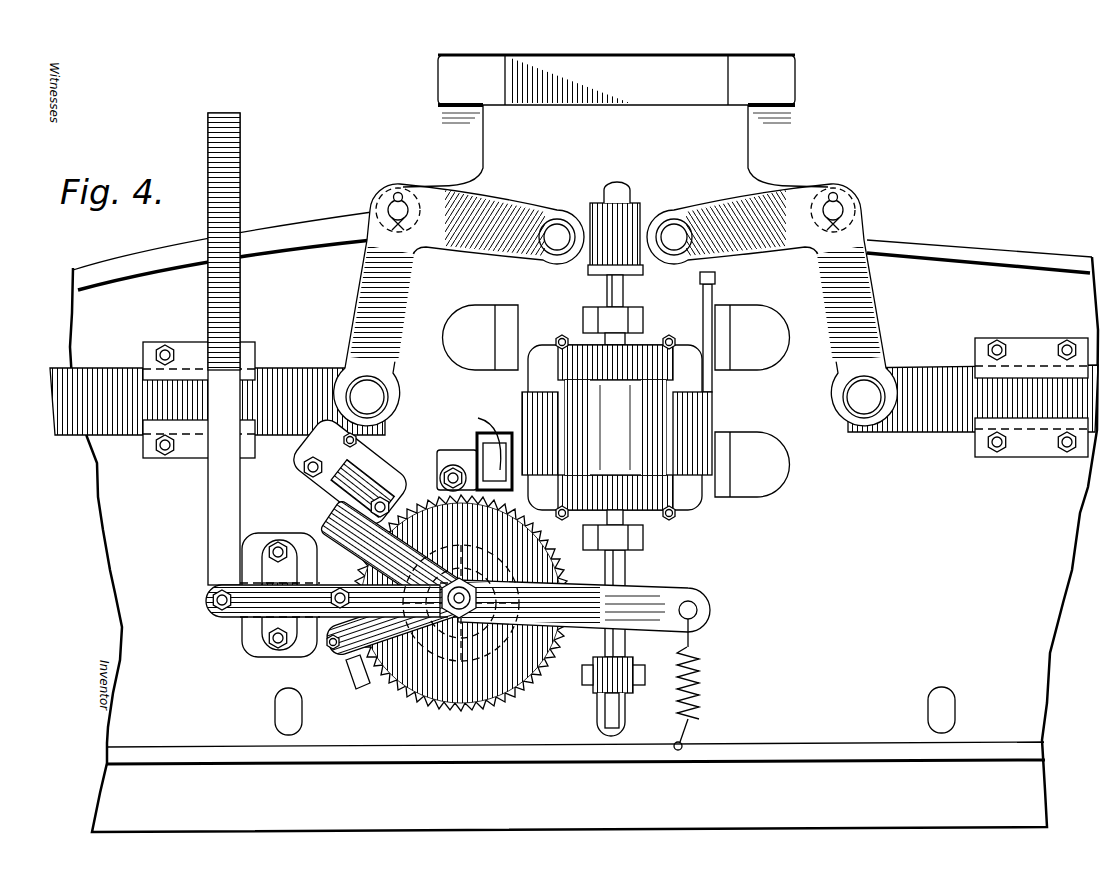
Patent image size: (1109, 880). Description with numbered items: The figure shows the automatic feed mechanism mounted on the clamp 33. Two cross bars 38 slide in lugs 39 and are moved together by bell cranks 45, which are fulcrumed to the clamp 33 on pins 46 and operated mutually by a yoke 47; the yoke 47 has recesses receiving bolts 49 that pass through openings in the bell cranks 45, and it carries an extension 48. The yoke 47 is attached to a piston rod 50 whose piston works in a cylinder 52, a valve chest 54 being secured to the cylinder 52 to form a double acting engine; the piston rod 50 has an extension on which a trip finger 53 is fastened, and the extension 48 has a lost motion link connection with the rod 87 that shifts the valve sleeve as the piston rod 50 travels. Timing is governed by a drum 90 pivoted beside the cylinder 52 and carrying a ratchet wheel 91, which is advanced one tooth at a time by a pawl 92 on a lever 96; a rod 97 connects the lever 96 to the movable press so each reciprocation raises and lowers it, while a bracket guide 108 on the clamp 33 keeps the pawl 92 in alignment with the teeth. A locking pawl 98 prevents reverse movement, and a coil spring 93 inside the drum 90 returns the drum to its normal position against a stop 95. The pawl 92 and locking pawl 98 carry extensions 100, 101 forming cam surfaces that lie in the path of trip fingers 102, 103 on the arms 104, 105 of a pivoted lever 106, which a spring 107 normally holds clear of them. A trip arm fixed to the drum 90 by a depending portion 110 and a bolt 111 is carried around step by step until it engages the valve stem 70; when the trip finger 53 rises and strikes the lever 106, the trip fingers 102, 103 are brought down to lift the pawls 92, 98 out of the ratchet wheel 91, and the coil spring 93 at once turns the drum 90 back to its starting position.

The clamp 33 is at (584, 522).
The cross bar 38 is at (75, 408).
The lug 39 is at (180, 348).
The bell crank 45 is at (358, 318).
The pin 46 is at (398, 205).
The yoke 47 is at (620, 212).
The extension of the yoke 48 is at (683, 270).
The bolt 49 is at (557, 232).
The piston rod 50 is at (607, 278).
The cylinder 52 is at (615, 427).
The trip finger 53 is at (625, 665).
The valve chest 54 is at (527, 408).
The valve stem 70 is at (478, 418).
The rod 87 is at (705, 316).
The drum 90 is at (625, 568).
The ratchet wheel 91 is at (461, 603).
The pawl 92 is at (362, 594).
The coil spring 93 is at (480, 572).
The stop 95 is at (445, 550).
The lever 96 is at (245, 615).
The rod 97 is at (210, 493).
The locking pawl 98 is at (442, 480).
The extension 100 is at (352, 680).
The extension 101 is at (328, 527).
The trip finger 102 is at (330, 655).
The trip finger 103 is at (333, 520).
The arm 104 is at (412, 604).
The arm 105 is at (392, 556).
The lever 106 is at (584, 606).
The spring 107 is at (697, 686).
The bracket guide 108 is at (225, 585).
The depending portion 110 is at (438, 462).
The bolt 111 is at (453, 465).